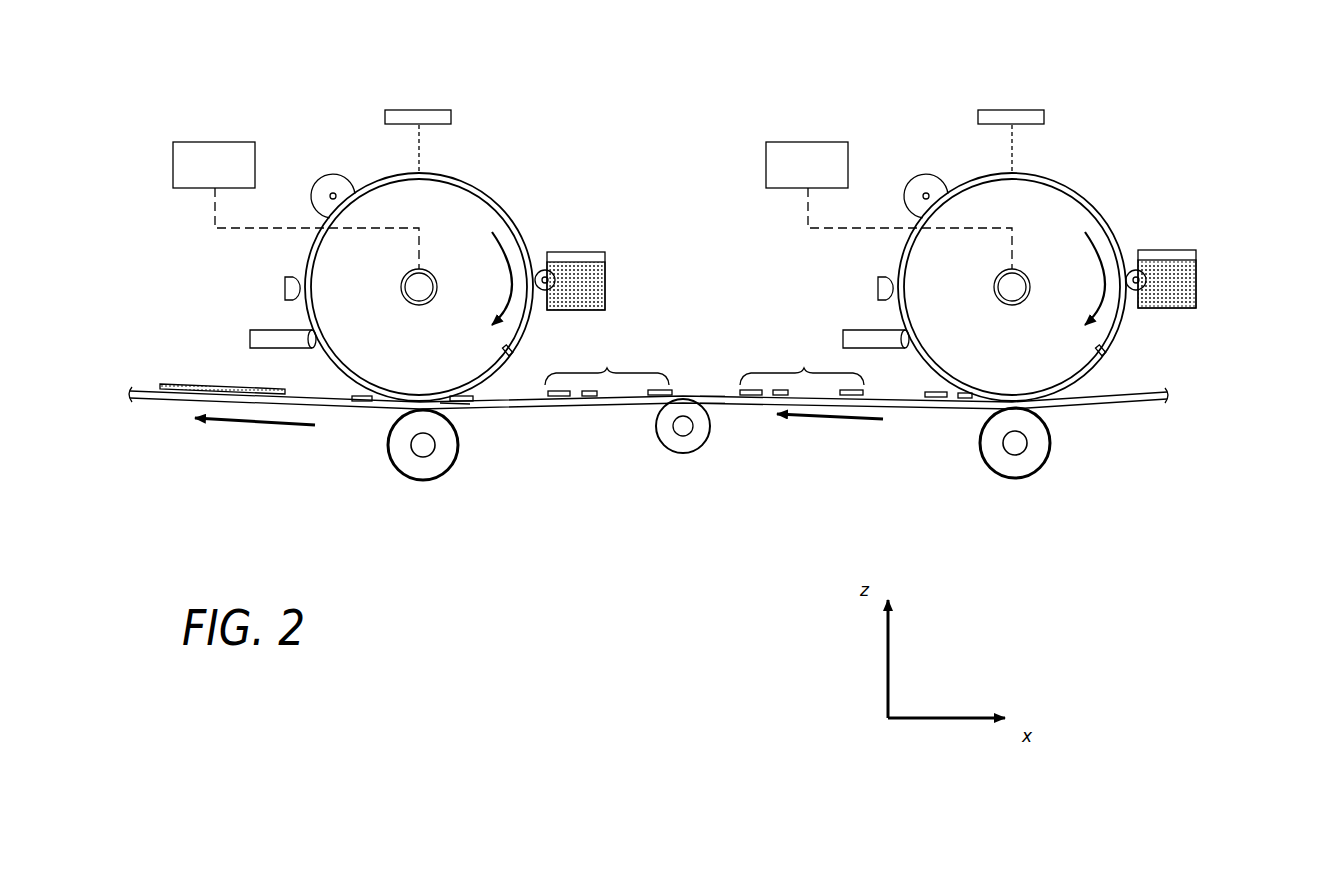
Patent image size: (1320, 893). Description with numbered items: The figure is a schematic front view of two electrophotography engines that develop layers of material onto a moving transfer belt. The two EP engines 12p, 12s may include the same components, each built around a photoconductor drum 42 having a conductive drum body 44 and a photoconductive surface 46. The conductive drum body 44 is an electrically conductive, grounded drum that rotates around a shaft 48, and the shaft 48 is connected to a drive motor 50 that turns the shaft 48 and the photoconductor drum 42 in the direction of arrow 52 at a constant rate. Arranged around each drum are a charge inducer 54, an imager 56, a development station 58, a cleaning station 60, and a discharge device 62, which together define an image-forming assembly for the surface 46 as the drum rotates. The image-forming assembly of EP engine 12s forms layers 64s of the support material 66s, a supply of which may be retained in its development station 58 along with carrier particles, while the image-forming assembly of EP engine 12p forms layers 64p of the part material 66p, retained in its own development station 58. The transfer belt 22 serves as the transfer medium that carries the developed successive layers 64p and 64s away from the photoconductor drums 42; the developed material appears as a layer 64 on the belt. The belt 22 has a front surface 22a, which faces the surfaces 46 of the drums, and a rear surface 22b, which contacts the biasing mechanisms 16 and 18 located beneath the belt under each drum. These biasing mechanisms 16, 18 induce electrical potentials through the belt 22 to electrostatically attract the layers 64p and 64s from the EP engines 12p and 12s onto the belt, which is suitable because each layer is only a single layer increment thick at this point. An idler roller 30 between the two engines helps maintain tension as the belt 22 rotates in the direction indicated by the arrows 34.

The EP engine 12p is at (510, 97).
The EP engine 12s is at (1103, 97).
The biasing mechanism 16 is at (1030, 455).
The biasing mechanism 18 is at (438, 456).
The transfer belt 22 is at (1135, 410).
The front surface 22a is at (713, 395).
The rear surface 22b is at (713, 404).
The idler roller 30 is at (686, 452).
The arrows 34 is at (266, 428).
The photoconductor drum 42 is at (525, 207).
The conductive drum body 44 is at (434, 360).
The photoconductive surface 46 is at (478, 183).
The shaft 48 is at (413, 290).
The drive motor 50 is at (186, 142).
The arrow 52 is at (506, 262).
The charge inducer 54 is at (357, 186).
The imager 56 is at (401, 110).
The development station 58 is at (612, 243).
The cleaning station 60 is at (262, 330).
The discharge device 62 is at (285, 278).
The layer 64 is at (209, 382).
The layers of part material 64p is at (532, 339).
The layers of support material 64s is at (360, 404).
The part material 66p is at (592, 278).
The support material 66s is at (1183, 290).